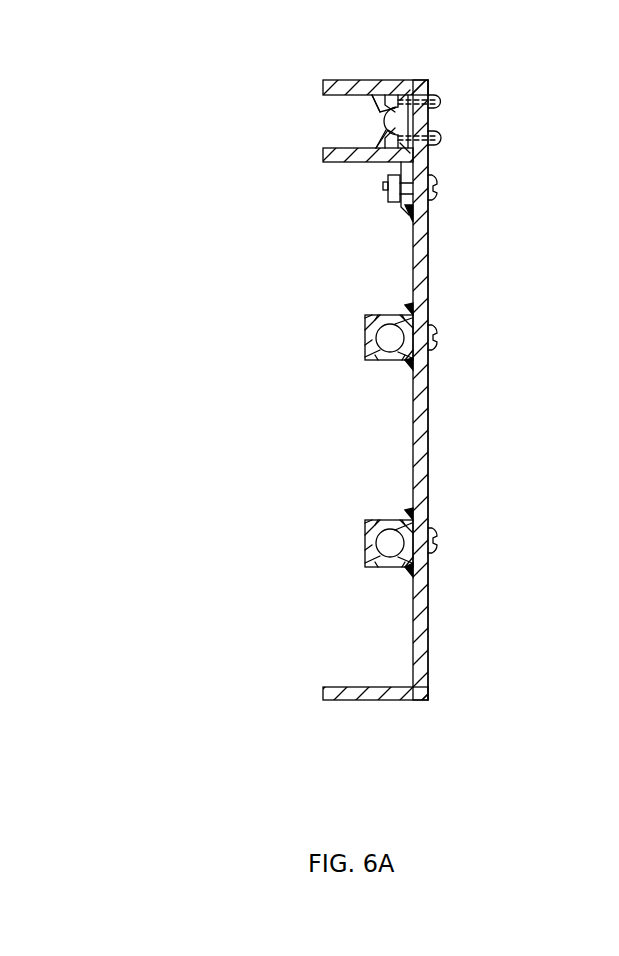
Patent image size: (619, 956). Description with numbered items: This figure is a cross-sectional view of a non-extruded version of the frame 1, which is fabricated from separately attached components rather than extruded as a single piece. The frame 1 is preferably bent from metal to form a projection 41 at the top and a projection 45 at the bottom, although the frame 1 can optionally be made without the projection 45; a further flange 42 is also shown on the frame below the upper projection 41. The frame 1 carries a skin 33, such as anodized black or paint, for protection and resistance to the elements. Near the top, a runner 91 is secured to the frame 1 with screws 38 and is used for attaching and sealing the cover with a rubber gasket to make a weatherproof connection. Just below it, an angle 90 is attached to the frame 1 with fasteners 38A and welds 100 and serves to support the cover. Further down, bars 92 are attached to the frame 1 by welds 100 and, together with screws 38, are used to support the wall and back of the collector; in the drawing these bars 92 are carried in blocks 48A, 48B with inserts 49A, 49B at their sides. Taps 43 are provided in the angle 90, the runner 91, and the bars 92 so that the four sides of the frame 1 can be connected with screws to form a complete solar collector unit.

The frame 1 is at (428, 457).
The skin 33 is at (432, 272).
The screws 38 is at (428, 138).
The fasteners 38A is at (437, 190).
The projection 41 is at (342, 80).
The intermediate flange 42 is at (323, 163).
The taps 43 is at (390, 117).
The projection 45 is at (355, 700).
The bearing block 48A is at (382, 567).
The bearing block 48B is at (380, 362).
The bearing block insert 49A is at (380, 520).
The bearing block insert 49B is at (382, 315).
The angle 90 is at (382, 163).
The runner 91 is at (382, 138).
The bars 92 is at (365, 338).
The welds 100 is at (405, 218).